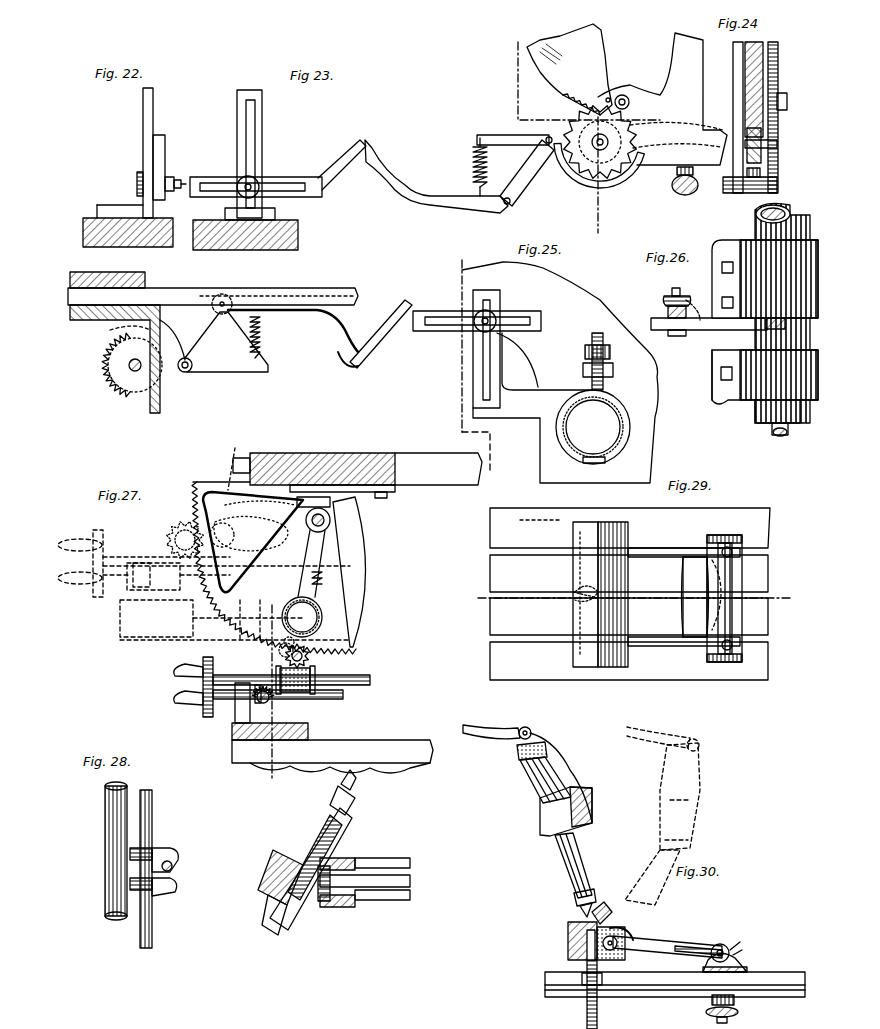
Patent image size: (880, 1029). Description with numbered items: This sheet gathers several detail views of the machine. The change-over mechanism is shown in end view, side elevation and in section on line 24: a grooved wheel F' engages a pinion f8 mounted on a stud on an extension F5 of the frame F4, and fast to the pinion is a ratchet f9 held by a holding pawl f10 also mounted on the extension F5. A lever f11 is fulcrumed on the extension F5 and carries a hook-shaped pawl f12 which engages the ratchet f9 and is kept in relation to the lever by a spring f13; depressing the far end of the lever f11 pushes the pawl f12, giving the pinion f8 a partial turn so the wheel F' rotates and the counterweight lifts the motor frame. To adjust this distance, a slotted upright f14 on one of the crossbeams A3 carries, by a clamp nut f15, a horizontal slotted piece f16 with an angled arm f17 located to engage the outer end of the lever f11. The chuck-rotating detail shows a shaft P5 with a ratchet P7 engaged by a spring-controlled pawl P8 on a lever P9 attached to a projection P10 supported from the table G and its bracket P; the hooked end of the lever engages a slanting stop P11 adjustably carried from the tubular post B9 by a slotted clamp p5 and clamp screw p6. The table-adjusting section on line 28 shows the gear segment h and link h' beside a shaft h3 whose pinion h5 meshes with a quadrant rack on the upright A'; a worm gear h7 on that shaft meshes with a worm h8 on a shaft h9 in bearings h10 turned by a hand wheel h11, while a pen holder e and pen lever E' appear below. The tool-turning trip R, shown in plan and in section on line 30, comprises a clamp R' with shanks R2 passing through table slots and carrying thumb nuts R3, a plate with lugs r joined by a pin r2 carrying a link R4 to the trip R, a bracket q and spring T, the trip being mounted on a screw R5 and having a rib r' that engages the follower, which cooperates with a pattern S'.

In FIG. 22, the slotted upright f14 is at (153, 126).
In FIG. 23, the slotted upright f14 is at (262, 140).
In FIG. 22, the clamp nut f15 is at (176, 180).
In FIG. 23, the clamp nut f15 is at (255, 180).
In FIG. 22, the horizontal slotted piece f16 is at (140, 178).
In FIG. 23, the horizontal slotted piece f16 is at (305, 178).
In FIG. 22, the arm f17 is at (165, 160).
In FIG. 23, the arm f17 is at (350, 150).
In FIG. 22, the crossbeam A3 is at (90, 218).
In FIG. 23, the crossbeam A3 is at (298, 240).
In FIG. 24, the section line 24- 24 is at (580, 132).
In FIG. 24, the lever f11 is at (494, 206).
In FIG. 24, the spring f13 is at (472, 160).
In FIG. 24, the extension of the frame F5 is at (540, 170).
In FIG. 24, the ratchet f9 is at (610, 176).
In FIG. 24, the hook-shaped pawl f12 is at (590, 186).
In FIG. 24, the wheel F' is at (569, 69).
In FIG. 24, the frame F4 is at (740, 96).
In FIG. 24, the holding pawl f10 is at (630, 104).
In FIG. 24, the pinion f8 is at (672, 183).
In FIG. 25, the table G is at (70, 282).
In FIG. 29, the table G is at (760, 528).
In FIG. 30, the table G is at (792, 978).
In FIG. 25, the projection P10 is at (290, 288).
In FIG. 25, the bracket P is at (150, 406).
In FIG. 25, the shaft P5 is at (128, 372).
In FIG. 25, the ratchet P7 is at (170, 372).
In FIG. 25, the spring-controlled pawl P8 is at (212, 308).
In FIG. 25, the lever P9 is at (320, 315).
In FIG. 25, the slanting stop P11 is at (368, 345).
In FIG. 25, the slotted clamp p5 is at (492, 358).
In FIG. 26, the slotted clamp p5 is at (692, 300).
In FIG. 25, the clamp screw p6 is at (478, 314).
In FIG. 26, the clamp screw p6 is at (672, 295).
In FIG. 25, the tubular post B9 is at (612, 422).
In FIG. 26, the tubular post B9 is at (755, 343).
In FIG. 27, the upright A' is at (357, 465).
In FIG. 27, the gear segment h is at (261, 553).
In FIG. 27, the pivot link h' is at (282, 512).
In FIG. 27, the shaft h3 is at (325, 623).
In FIG. 27, the pinion h5 is at (318, 638).
In FIG. 27, the worm gear h7 is at (285, 655).
In FIG. 27, the worm h8 is at (305, 695).
In FIG. 27, the shaft h9 is at (362, 680).
In FIG. 28, the shaft h9 is at (172, 864).
In FIG. 27, the bearing h10 is at (320, 672).
In FIG. 28, the bearing h10 is at (172, 892).
In FIG. 27, the hand wheel h11 is at (212, 664).
In FIG. 27, the section line 28- 28 is at (271, 696).
In FIG. 27, the pen holder e is at (330, 846).
In FIG. 27, the pen lever E' is at (361, 781).
In FIG. 30, the pen lever E' is at (581, 807).
In FIG. 29, the section line 30- 30 is at (627, 597).
In FIG. 29, the trip R is at (571, 594).
In FIG. 30, the trip R is at (586, 941).
In FIG. 29, the lug r is at (574, 606).
In FIG. 29, the link R4 is at (669, 594).
In FIG. 30, the link R4 is at (668, 946).
In FIG. 29, the bracket q is at (745, 598).
In FIG. 29, the pin r2 is at (735, 590).
In FIG. 30, the pin r2 is at (722, 942).
In FIG. 30, the screw R5 is at (587, 1010).
In FIG. 30, the rib r' is at (612, 907).
In FIG. 30, the spring T is at (742, 941).
In FIG. 30, the clamp R' is at (739, 957).
In FIG. 30, the shank R2 is at (736, 996).
In FIG. 30, the thumb nut R3 is at (706, 1012).
In FIG. 30, the pattern S' is at (556, 825).